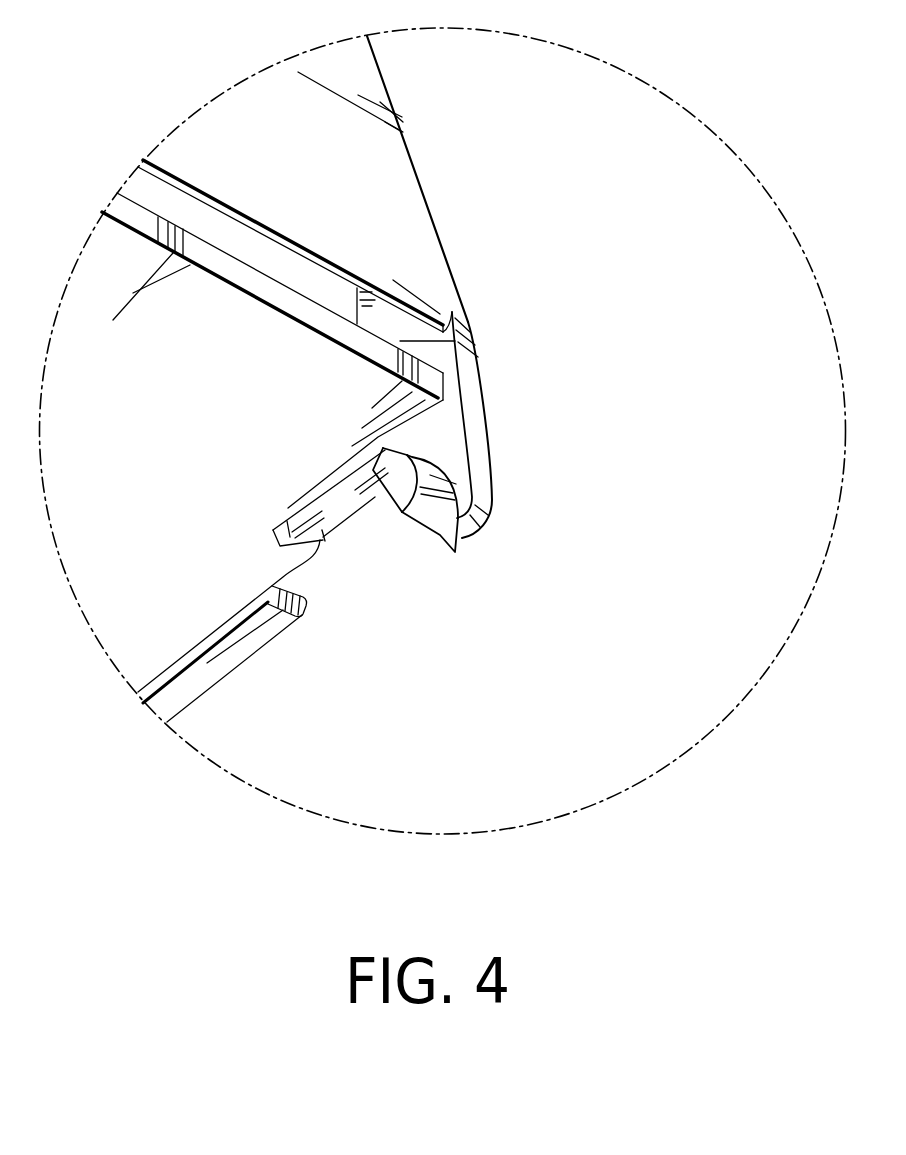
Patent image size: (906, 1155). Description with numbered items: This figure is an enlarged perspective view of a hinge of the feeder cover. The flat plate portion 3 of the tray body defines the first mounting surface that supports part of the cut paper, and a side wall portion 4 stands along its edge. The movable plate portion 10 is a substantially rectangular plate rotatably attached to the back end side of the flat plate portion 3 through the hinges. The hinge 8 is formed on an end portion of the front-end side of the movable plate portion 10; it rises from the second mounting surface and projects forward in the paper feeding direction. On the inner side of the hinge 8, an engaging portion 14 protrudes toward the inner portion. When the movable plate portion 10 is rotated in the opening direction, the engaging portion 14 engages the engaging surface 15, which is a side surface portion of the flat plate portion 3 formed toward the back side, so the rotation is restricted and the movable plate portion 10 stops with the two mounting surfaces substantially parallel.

The flat plate portion 3 is at (203, 515).
The side wall portion 4 is at (218, 668).
The hinge 8 is at (515, 395).
The movable plate portion 10 is at (407, 203).
The engaging portion 14 is at (467, 537).
The engaging surface 15 is at (347, 507).